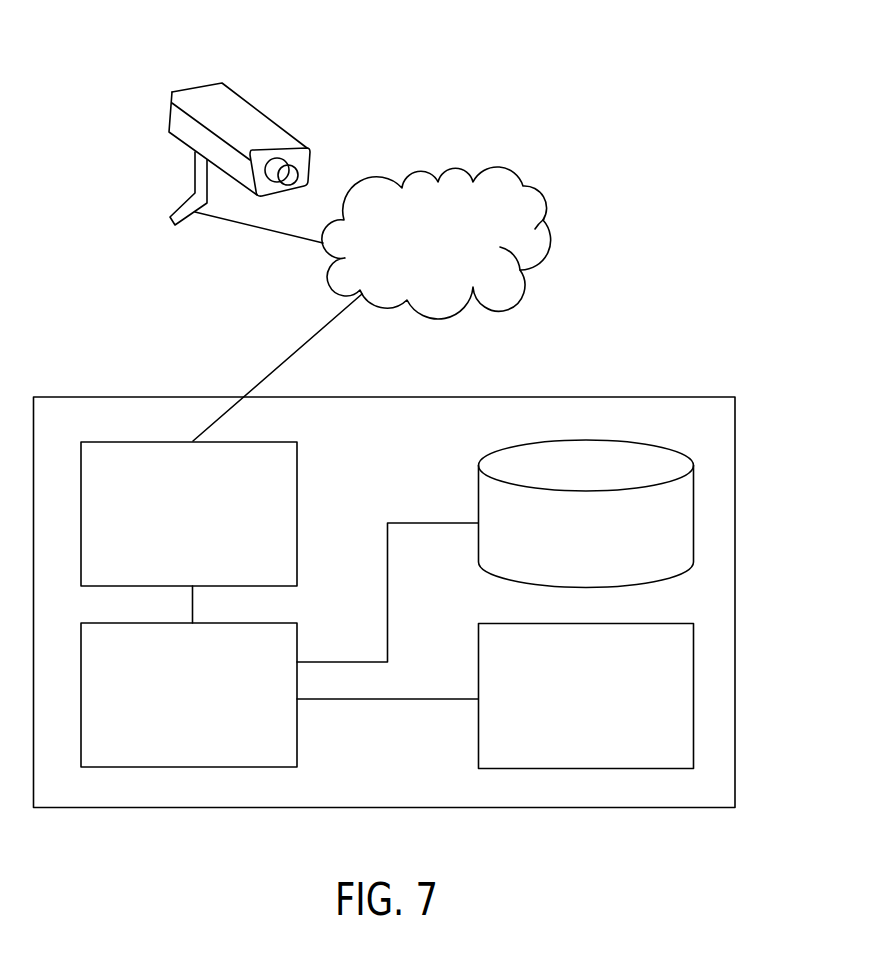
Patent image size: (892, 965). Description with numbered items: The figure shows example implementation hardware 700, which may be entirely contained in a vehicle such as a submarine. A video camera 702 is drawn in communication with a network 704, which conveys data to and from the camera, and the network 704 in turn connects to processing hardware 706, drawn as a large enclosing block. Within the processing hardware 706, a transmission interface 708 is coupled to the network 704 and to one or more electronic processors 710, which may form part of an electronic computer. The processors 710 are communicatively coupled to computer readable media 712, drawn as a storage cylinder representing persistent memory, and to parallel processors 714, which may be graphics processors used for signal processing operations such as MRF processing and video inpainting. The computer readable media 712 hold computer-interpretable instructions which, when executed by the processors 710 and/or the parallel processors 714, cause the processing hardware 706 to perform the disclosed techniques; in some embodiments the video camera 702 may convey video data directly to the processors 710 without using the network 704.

The implementation hardware 700 is at (521, 86).
The video camera 702 is at (263, 113).
The network 704 is at (540, 193).
The processing hardware 706 is at (150, 808).
The transmission interface 708 is at (297, 478).
The electronic processor 710 is at (297, 735).
The computer readable media 712 is at (478, 493).
The parallel processors 714 is at (478, 665).